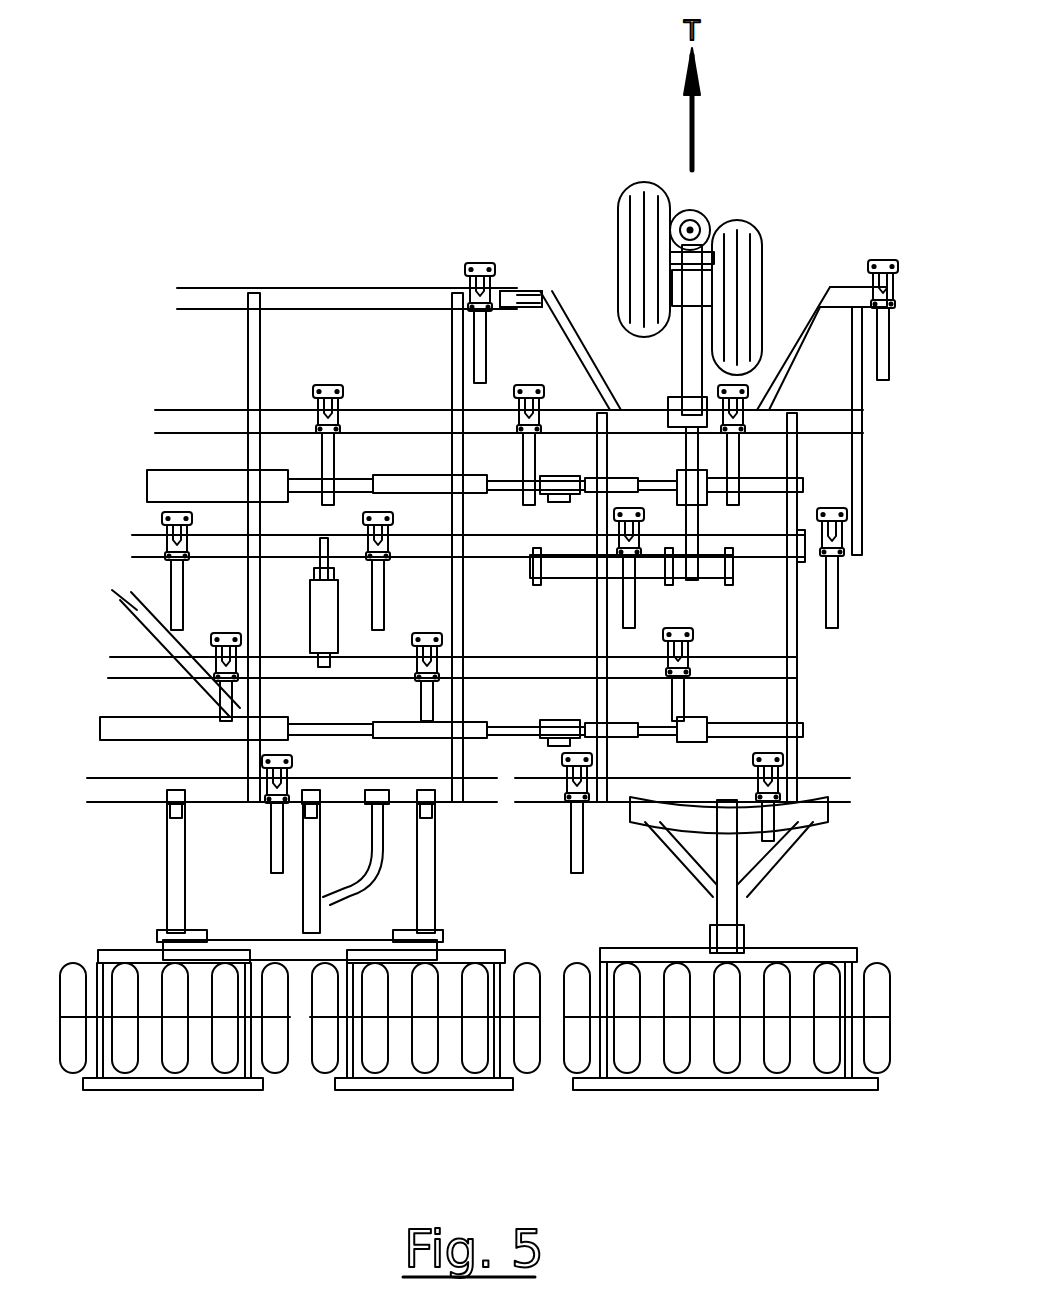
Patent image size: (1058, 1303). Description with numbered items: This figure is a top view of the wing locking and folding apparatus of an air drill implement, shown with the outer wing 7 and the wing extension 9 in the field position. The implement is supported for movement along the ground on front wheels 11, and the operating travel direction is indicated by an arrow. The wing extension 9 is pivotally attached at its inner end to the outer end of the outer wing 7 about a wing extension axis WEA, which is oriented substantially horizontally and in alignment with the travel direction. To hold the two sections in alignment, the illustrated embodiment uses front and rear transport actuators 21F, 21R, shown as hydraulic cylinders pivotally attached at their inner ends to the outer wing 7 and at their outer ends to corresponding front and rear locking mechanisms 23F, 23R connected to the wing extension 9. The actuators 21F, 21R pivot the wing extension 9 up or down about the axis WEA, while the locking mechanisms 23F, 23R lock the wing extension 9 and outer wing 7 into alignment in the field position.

The outer wing 7 is at (373, 288).
The front wheels 11 is at (746, 216).
The wing extension 9 is at (797, 688).
The front transport actuator 21F is at (482, 497).
The rear transport actuator 21R is at (478, 742).
The front locking mechanism 23F is at (575, 462).
The rear locking mechanism 23R is at (582, 716).
The wing extension axis WEA is at (519, 291).